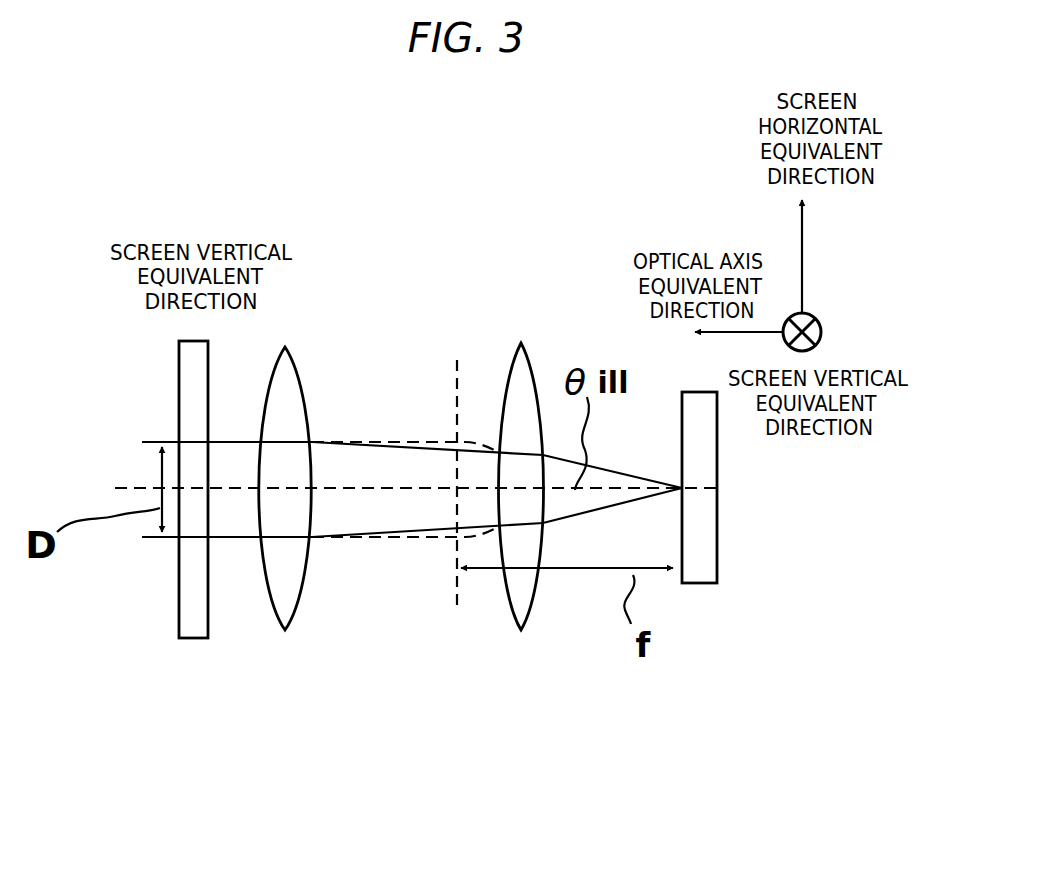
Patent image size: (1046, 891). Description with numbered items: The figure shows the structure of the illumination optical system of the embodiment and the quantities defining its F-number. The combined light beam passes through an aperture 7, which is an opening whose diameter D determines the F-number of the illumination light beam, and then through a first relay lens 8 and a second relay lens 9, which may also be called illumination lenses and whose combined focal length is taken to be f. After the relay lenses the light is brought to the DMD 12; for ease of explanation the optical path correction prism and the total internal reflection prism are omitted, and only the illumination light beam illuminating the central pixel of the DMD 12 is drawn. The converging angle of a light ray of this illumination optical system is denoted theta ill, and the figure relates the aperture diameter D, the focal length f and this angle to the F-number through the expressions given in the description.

The aperture 7 is at (186, 618).
The first relay lens 8 is at (300, 612).
The second relay lens 9 is at (538, 600).
The DMD 12 is at (700, 568).